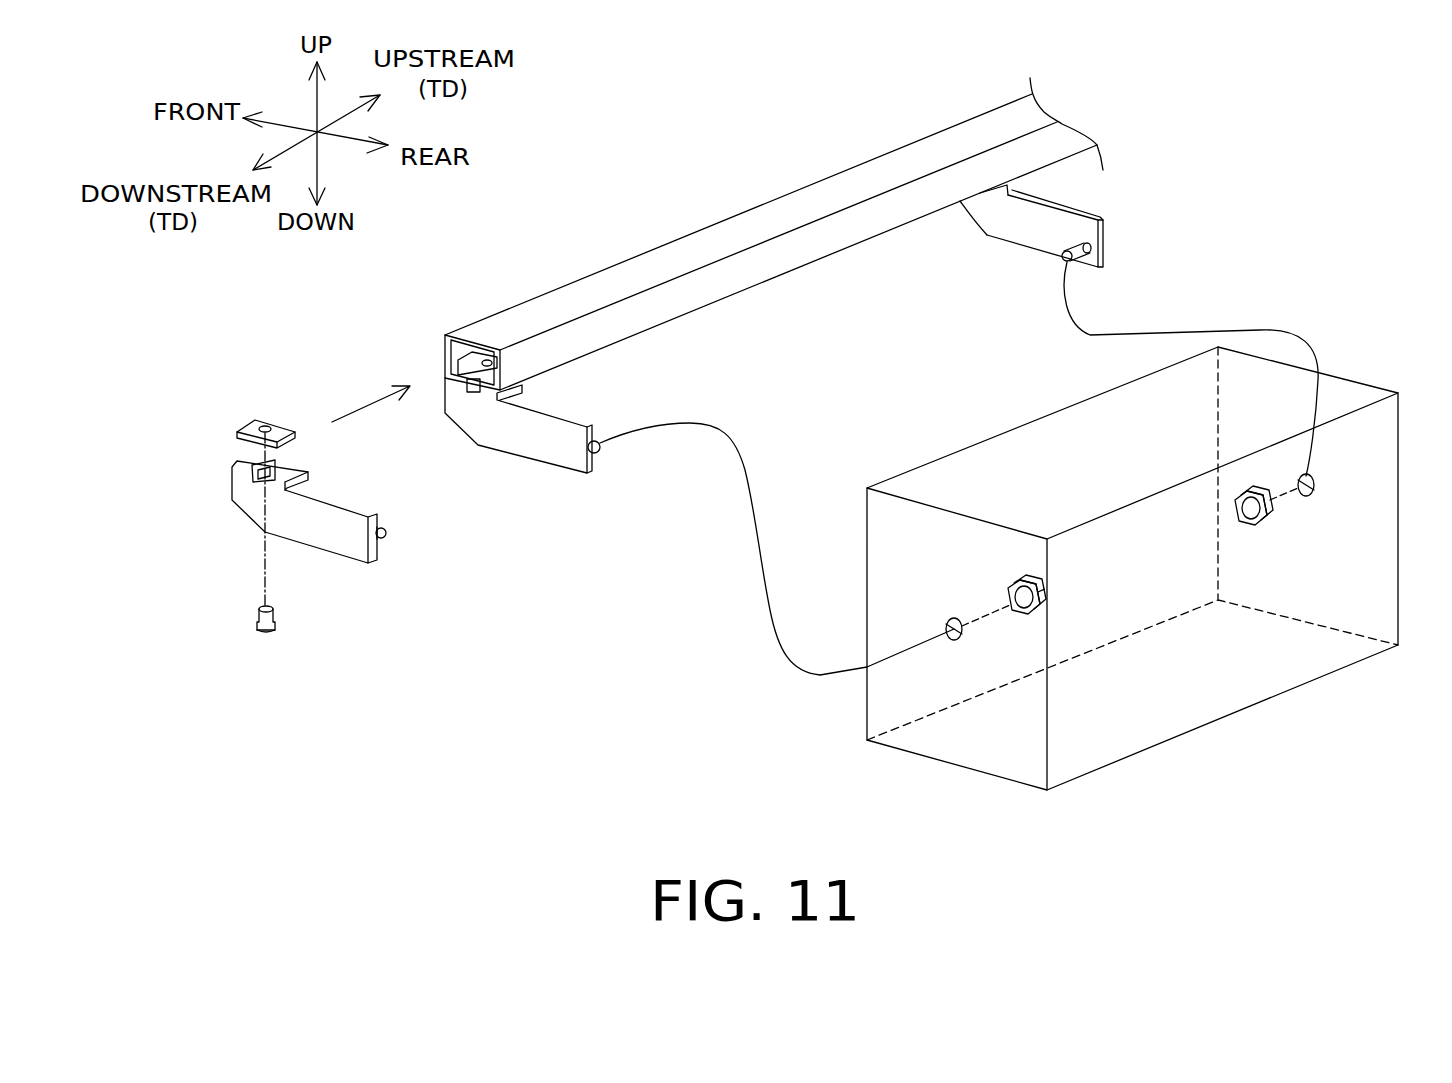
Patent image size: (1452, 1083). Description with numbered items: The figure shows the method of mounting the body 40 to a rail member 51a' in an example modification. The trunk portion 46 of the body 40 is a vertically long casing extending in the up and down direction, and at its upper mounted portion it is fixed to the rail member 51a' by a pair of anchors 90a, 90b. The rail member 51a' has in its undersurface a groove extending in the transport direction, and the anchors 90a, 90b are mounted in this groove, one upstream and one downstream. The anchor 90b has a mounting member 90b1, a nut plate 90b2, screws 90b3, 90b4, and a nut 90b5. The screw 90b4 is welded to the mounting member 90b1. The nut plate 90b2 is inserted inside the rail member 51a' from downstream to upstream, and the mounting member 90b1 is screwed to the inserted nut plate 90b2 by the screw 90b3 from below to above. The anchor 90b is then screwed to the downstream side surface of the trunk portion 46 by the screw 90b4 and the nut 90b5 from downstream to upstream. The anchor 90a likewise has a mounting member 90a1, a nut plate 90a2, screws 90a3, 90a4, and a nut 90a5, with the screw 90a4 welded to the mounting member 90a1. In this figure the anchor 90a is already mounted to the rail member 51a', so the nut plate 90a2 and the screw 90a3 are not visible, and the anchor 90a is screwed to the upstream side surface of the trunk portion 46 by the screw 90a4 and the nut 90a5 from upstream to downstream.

The rail member 51a' is at (774, 275).
The anchor 90a is at (1085, 192).
The mounting member 90a1 is at (1023, 233).
The nut plate 90a2 is at (983, 173).
The screw 90a3 is at (983, 215).
The screw 90a4 is at (1158, 252).
The nut 90a5 is at (1232, 502).
The anchor 90b is at (338, 511).
The mounting member 90b1 is at (318, 513).
The nut plate 90b2 is at (243, 420).
The screw 90b3 is at (266, 634).
The screw 90b4 is at (384, 534).
The nut 90b5 is at (1048, 570).
The trunk portion 46 is at (1170, 667).
The body 40 is at (1159, 585).